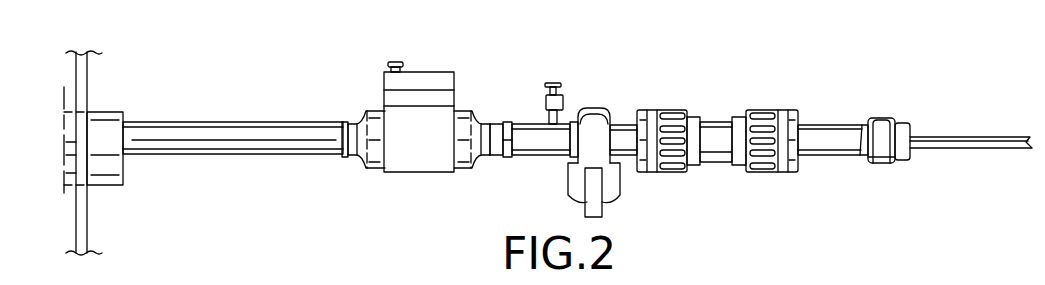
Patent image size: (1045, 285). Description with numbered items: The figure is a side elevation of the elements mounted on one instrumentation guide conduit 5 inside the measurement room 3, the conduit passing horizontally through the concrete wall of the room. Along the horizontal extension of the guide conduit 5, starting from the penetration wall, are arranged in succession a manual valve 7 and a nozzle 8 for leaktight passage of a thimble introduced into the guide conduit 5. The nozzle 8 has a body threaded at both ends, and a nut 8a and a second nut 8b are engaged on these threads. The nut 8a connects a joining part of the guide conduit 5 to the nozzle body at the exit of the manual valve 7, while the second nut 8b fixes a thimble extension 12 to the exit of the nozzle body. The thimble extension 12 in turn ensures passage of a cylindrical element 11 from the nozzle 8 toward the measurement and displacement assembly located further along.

The measurement room 3 is at (714, 97).
The instrumentation guide conduit 5 is at (260, 131).
The manual valve 7 is at (398, 128).
The nozzle 8 is at (716, 107).
The nut 8a is at (651, 121).
The second nut 8b is at (760, 119).
The cylindrical element 11 is at (963, 137).
The thimble extension 12 is at (843, 135).